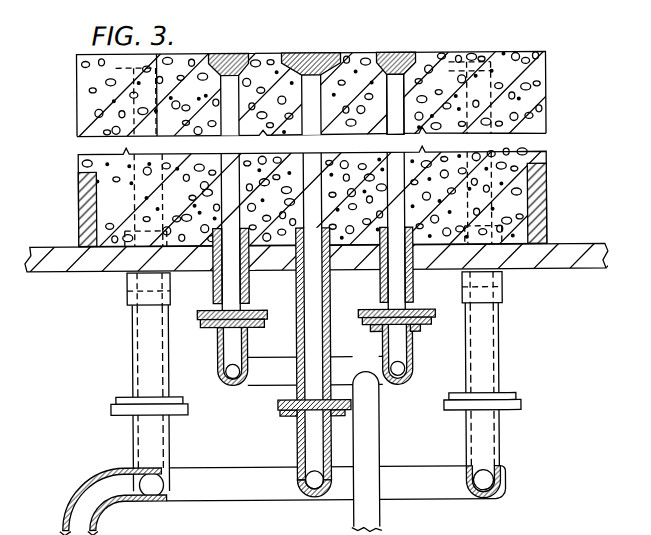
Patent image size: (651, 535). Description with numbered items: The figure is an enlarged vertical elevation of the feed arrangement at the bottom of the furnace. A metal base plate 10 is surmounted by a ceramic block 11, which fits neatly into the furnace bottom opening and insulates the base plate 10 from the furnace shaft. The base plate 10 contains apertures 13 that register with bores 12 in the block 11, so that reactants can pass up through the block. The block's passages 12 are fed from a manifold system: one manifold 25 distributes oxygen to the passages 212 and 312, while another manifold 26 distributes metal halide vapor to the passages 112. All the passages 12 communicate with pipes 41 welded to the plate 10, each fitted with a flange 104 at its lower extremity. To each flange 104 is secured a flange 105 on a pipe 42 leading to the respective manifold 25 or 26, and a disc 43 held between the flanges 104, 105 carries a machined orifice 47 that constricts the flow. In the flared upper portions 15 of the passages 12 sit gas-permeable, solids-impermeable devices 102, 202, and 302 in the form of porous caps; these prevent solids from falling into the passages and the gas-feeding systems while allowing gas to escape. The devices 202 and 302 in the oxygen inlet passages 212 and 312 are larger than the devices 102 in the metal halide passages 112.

The base plate 10 is at (574, 258).
The ceramic block 11 is at (537, 161).
The bores 12 is at (307, 203).
The apertures 13 is at (515, 247).
The upper portions 15 is at (547, 67).
The manifold 25 is at (440, 487).
The manifold 26 is at (370, 445).
The pipes 41 is at (460, 291).
The pipe 42 is at (465, 432).
The disc 43 is at (110, 403).
The machined orifice 47 is at (293, 355).
The gas-permeable solids-impermeable device 102 is at (419, 52).
The flange 104 is at (277, 404).
The flange 105 is at (286, 414).
The passages 112 is at (398, 108).
The gas-permeable solids-impermeable device 202 is at (466, 54).
The passages 212 is at (517, 211).
The gas-permeable solids-impermeable device 302 is at (336, 52).
The passages 312 is at (80, 148).